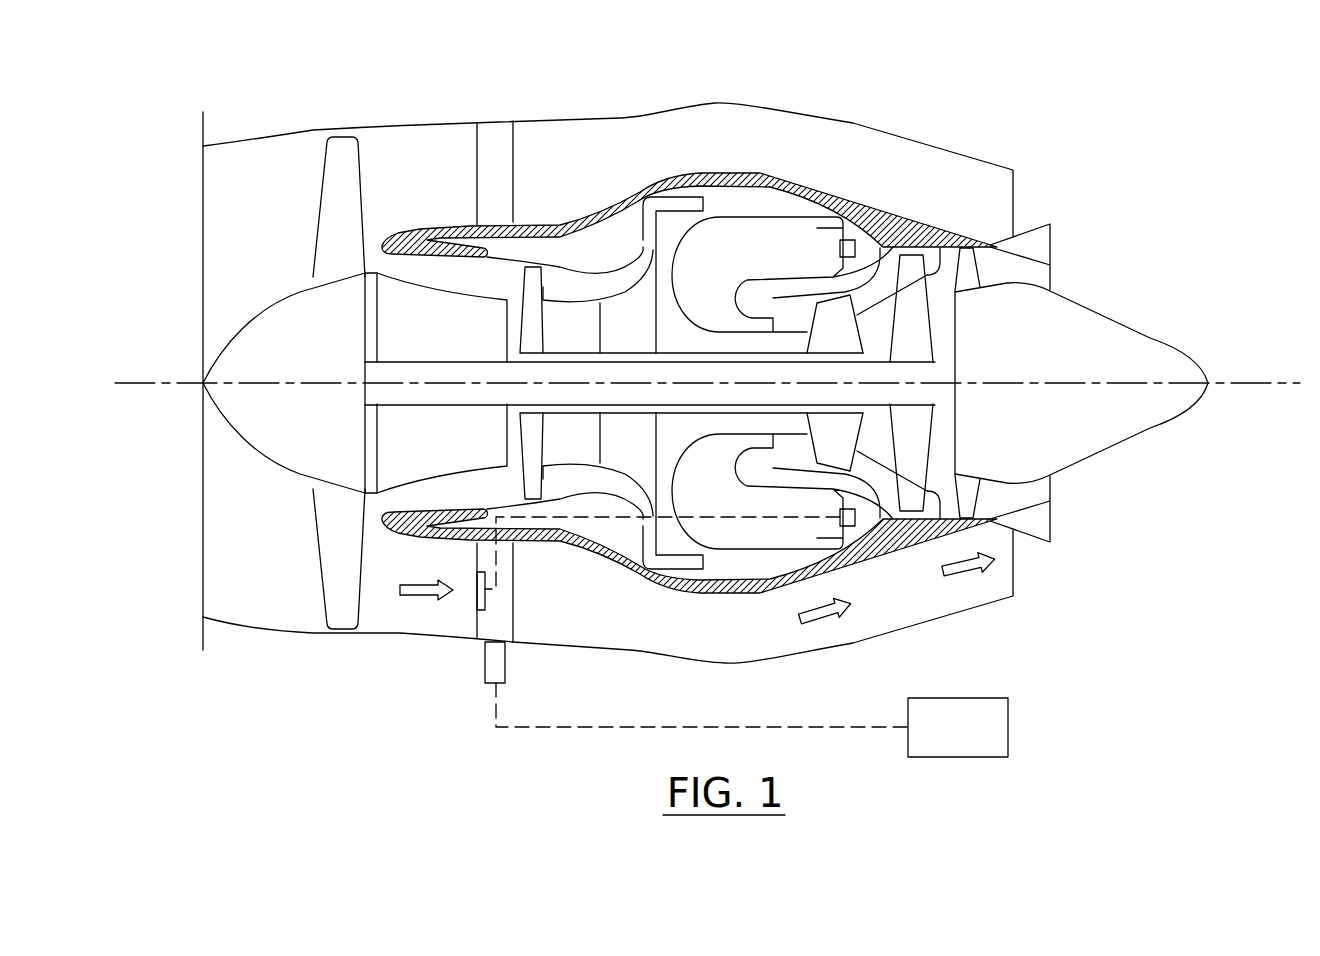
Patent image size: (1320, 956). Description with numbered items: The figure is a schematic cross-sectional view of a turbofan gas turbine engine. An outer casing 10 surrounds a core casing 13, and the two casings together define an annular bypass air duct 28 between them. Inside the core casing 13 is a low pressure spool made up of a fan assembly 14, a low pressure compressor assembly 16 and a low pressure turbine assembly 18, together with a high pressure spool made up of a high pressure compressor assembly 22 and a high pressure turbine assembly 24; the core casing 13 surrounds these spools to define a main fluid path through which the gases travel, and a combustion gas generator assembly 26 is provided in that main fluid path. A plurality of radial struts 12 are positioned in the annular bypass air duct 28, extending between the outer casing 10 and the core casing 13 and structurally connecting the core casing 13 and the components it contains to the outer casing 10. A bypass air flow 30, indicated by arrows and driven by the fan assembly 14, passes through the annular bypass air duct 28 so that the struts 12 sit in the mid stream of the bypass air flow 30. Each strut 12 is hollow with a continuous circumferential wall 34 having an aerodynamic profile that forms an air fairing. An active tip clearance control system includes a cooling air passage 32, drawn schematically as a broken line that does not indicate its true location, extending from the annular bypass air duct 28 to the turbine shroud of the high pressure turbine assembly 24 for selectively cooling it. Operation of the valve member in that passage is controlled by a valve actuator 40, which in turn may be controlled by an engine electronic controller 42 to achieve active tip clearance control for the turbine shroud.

The outer casing 10 is at (655, 118).
The struts 12 is at (487, 620).
The core casing 13 is at (677, 173).
The fan assembly 14 is at (320, 190).
The low pressure compressor assembly 16 is at (399, 320).
The low pressure turbine assembly 18 is at (937, 273).
The high pressure compressor assembly 22 is at (545, 283).
The high pressure turbine assembly 24 is at (867, 227).
The combustion gas generator assembly 26 is at (807, 237).
The annular bypass air duct 28 is at (707, 630).
The bypass air flow 30 is at (423, 597).
The cooling air passage 32 is at (767, 520).
The continuous circumferential wall 34 is at (478, 588).
The valve actuator 40 is at (485, 672).
The engine electronic controller (EEC) 42 is at (985, 698).